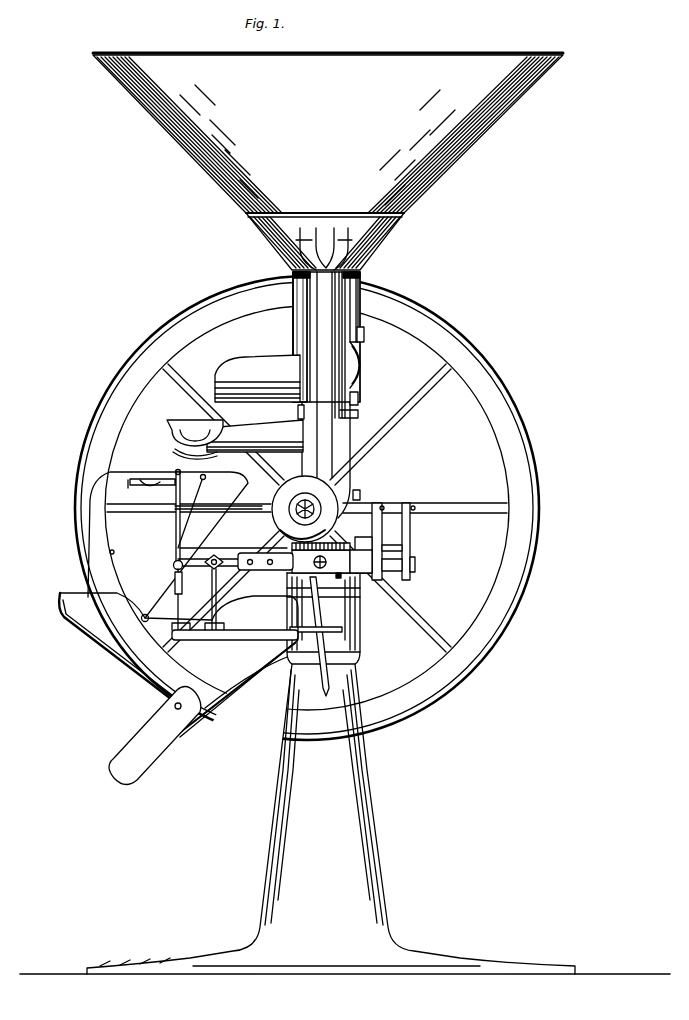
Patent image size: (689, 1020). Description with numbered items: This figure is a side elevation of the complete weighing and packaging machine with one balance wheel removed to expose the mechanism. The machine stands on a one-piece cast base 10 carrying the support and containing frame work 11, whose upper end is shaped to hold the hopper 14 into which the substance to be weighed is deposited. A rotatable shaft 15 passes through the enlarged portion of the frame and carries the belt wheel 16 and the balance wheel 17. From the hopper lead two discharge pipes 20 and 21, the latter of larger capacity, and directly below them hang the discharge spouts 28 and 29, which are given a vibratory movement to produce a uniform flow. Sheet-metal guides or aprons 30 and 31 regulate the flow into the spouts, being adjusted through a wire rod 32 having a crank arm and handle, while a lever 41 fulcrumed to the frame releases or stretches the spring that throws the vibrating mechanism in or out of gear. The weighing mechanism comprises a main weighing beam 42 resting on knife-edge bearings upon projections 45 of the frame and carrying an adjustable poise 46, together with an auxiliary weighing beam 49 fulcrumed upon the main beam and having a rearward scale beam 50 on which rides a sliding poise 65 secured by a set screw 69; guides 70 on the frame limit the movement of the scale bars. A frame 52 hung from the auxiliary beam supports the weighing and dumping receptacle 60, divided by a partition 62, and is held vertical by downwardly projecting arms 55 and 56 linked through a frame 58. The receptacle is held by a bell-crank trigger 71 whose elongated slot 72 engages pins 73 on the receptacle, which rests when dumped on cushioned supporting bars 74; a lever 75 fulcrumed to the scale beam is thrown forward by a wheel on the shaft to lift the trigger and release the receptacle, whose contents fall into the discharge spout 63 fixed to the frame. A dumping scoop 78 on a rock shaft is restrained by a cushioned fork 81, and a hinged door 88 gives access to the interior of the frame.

The base 10 is at (345, 773).
The support and containing frame work 11 is at (356, 265).
The hopper 14 is at (328, 161).
The rotatable shaft 15 is at (285, 489).
The belt wheel 16 is at (300, 512).
The balance wheel 17 is at (507, 463).
The discharge pipe 20 is at (358, 313).
The discharge pipe 21 is at (358, 292).
The discharge spout 28 is at (285, 439).
The discharge spout 29 is at (290, 380).
The guide or apron 30 is at (298, 414).
The guide or apron 31 is at (293, 342).
The wire rod 32 is at (358, 400).
The lever 41 is at (316, 644).
The main weighing beam 42 is at (246, 553).
The projection 45 is at (415, 566).
The poise 46 is at (372, 549).
The auxiliary weighing beam 49 is at (222, 566).
The scale beam 50 is at (361, 561).
The frame 52 is at (192, 512).
The arm 55 is at (181, 598).
The arm 56 is at (212, 583).
The frame 58 is at (236, 640).
The weighing and dumping receptacle 60 is at (168, 544).
The partition 62 is at (364, 335).
The discharge spout 63 is at (178, 689).
The sliding poise 65 is at (321, 560).
The set screw 69 is at (329, 561).
The guides 70 is at (404, 523).
The trigger 71 is at (148, 480).
The elongated slot 72 is at (152, 491).
The pins 73 is at (114, 552).
The cushioned supporting bars 74 is at (142, 620).
The lever 75 is at (126, 491).
The dumping scoop 78 is at (195, 433).
The cushioned fork 81 is at (173, 455).
The hinged door 88 is at (360, 496).